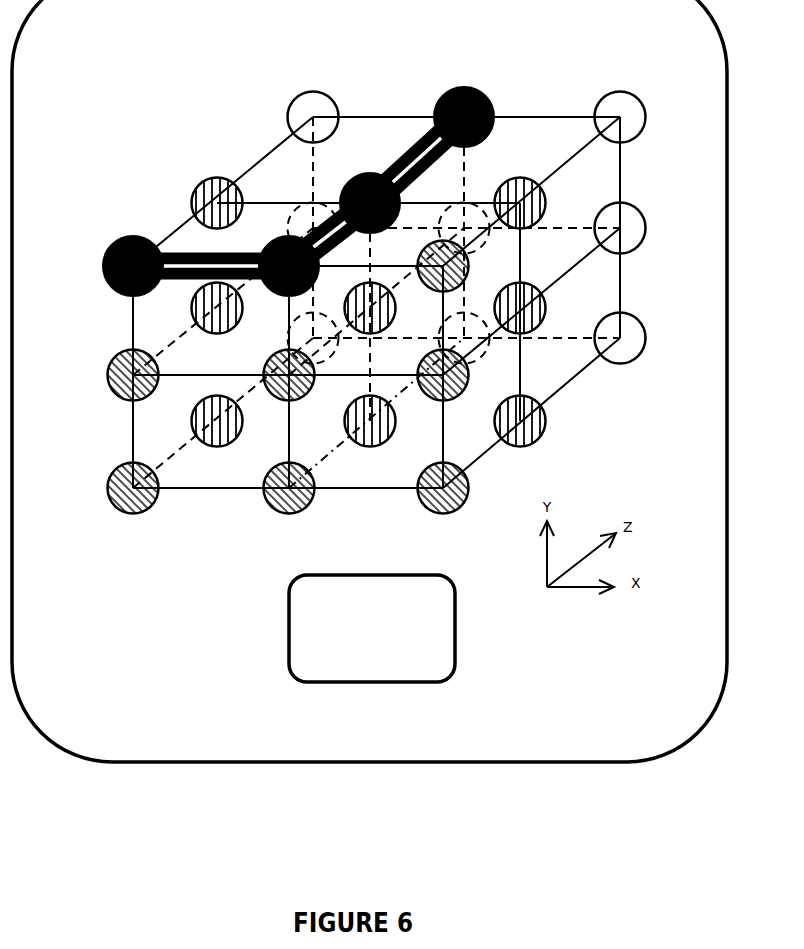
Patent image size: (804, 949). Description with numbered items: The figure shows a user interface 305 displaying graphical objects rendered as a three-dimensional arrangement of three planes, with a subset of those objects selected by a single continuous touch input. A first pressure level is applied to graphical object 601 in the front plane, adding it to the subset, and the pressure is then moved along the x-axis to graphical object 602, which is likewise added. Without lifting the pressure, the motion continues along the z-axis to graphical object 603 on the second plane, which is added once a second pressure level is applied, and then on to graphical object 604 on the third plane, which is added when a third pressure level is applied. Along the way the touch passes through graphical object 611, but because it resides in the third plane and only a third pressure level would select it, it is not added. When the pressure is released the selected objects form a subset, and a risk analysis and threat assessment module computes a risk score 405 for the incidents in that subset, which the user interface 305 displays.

The graphical object 601 is at (119, 238).
The graphical object 602 is at (273, 243).
The graphical object 603 is at (370, 172).
The graphical object 604 is at (462, 86).
The graphical object 611 is at (302, 200).
The risk score 405 is at (372, 628).
The user interface 305 is at (369, 381).